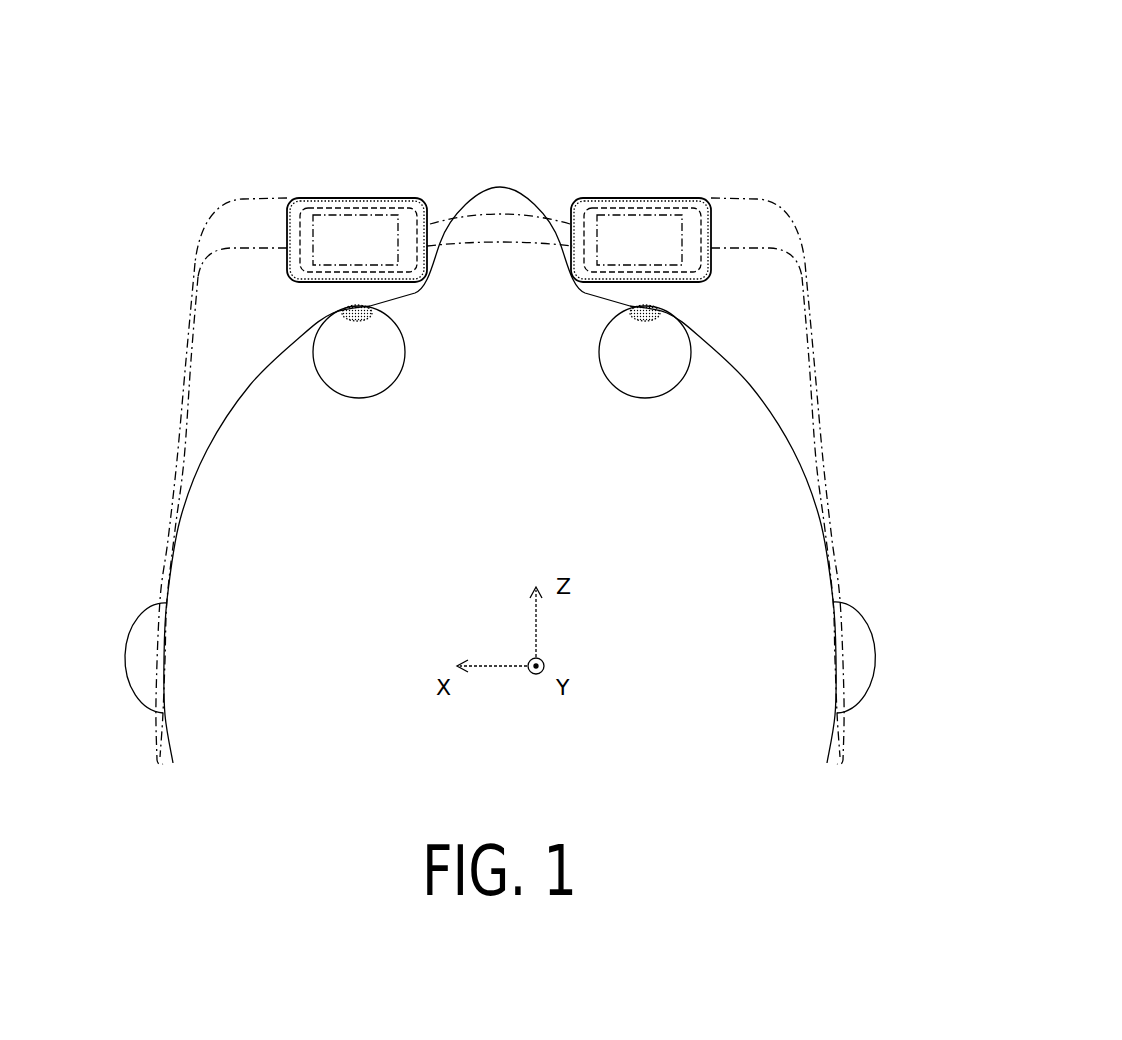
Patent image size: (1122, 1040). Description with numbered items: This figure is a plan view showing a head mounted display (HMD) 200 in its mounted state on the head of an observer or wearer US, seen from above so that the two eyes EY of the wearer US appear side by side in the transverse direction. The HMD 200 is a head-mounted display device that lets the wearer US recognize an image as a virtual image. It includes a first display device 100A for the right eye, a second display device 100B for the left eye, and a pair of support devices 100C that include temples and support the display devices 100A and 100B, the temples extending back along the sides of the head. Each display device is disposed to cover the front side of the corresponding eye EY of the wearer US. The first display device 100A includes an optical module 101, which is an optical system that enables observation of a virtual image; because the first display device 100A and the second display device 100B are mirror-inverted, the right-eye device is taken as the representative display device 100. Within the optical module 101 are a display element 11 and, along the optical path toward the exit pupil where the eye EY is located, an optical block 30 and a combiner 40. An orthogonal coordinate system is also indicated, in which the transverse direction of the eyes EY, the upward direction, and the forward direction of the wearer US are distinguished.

The head mounted display (HMD) 200 is at (822, 30).
The display device 100 is at (521, 189).
The first display device 100A is at (698, 180).
The second display device 100B is at (302, 180).
The support device 100C is at (177, 405).
The optical module 101 is at (287, 222).
The display element 11 is at (363, 197).
The optical block 30 is at (383, 197).
The combiner 40 is at (408, 197).
The wearer US is at (723, 377).
The eye EY is at (360, 378).